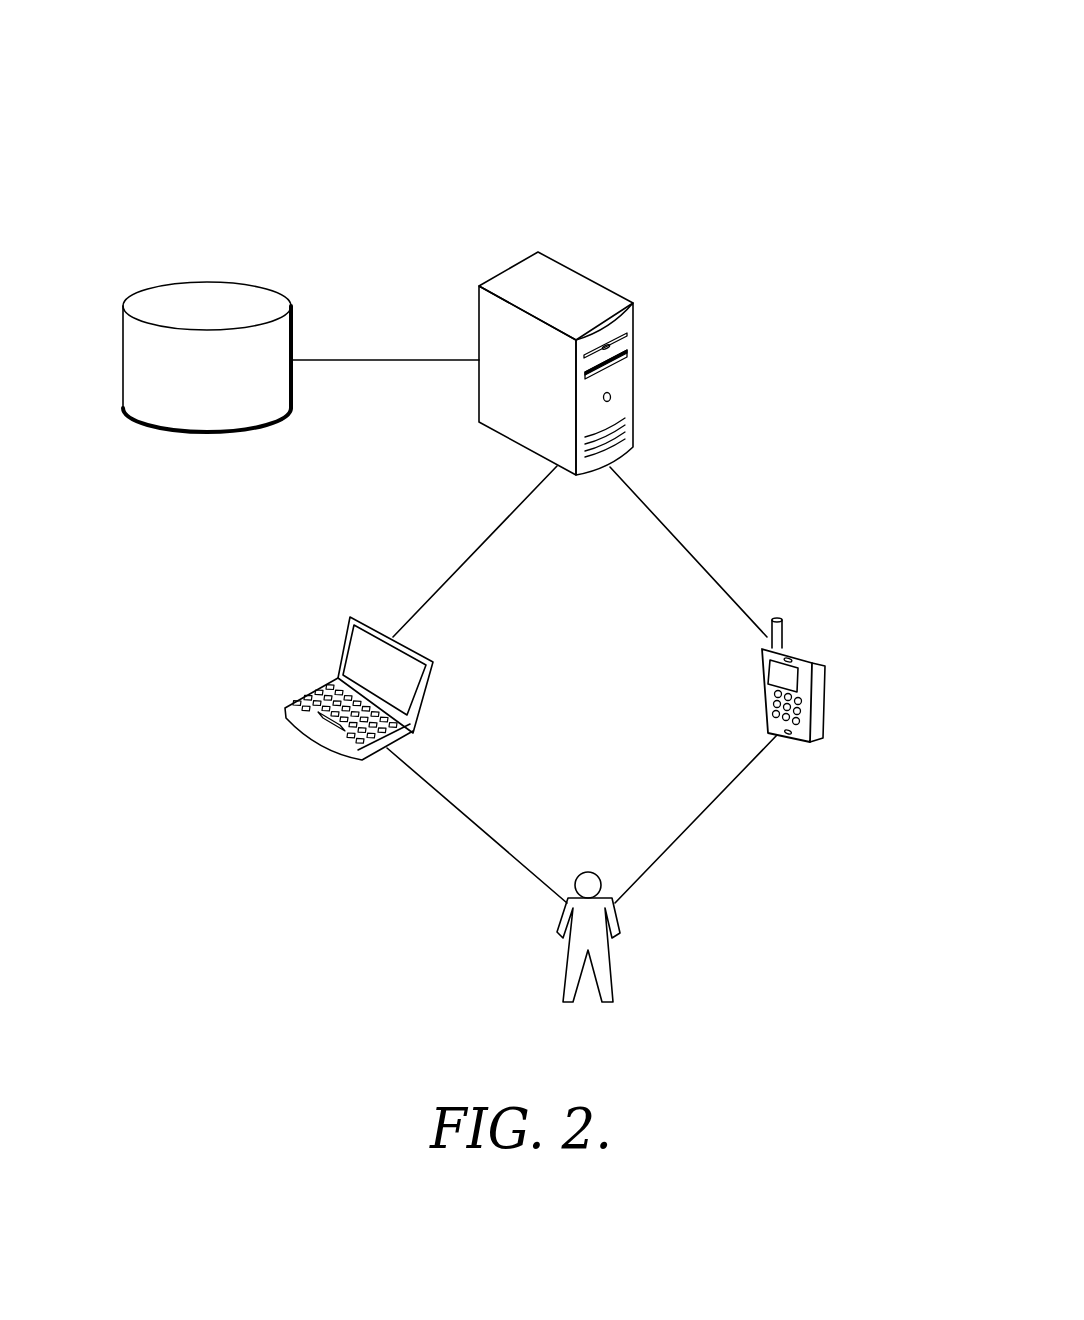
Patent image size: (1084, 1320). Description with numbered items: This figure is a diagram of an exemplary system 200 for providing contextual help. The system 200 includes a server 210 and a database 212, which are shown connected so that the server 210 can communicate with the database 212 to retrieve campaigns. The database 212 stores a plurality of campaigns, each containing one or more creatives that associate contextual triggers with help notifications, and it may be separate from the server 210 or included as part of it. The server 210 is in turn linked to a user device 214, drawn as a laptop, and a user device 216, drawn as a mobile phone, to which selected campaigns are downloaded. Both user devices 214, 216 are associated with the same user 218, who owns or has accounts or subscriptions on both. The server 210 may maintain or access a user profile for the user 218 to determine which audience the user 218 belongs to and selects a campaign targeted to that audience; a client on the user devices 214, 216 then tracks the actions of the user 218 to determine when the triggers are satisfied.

The system 200 is at (187, 96).
The server 210 is at (597, 283).
The database 212 is at (257, 283).
The user device 214 is at (315, 687).
The user device 216 is at (805, 645).
The user 218 is at (618, 993).